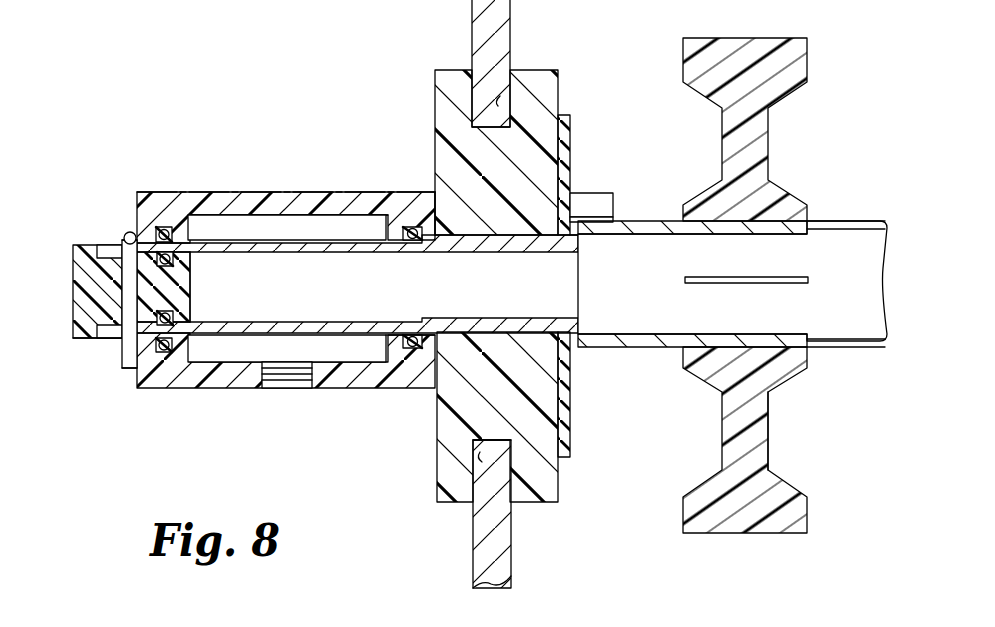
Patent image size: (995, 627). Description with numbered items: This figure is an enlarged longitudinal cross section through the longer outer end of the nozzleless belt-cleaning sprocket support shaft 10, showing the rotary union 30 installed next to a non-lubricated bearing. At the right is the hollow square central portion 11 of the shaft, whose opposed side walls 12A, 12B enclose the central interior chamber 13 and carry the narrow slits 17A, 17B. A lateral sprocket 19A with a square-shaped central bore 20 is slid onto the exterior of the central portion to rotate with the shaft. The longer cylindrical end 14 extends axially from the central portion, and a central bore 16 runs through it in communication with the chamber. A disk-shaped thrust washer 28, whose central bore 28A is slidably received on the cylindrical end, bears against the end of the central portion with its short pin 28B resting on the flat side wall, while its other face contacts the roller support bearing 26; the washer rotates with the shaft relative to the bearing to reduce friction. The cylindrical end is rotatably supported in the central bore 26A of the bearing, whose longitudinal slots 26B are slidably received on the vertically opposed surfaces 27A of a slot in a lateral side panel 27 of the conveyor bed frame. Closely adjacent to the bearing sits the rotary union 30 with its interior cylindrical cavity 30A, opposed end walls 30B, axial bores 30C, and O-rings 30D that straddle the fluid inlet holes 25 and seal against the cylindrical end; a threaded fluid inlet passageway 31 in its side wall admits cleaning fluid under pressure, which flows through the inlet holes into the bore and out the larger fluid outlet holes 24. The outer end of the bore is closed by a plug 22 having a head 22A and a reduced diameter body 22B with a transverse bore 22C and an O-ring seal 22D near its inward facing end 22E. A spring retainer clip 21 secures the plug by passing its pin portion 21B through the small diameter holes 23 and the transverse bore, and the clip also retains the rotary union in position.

The nozzleless belt-cleaning sprocket support shaft 10 is at (830, 190).
The central portion 11 is at (828, 352).
The side wall 12A is at (642, 220).
The side wall 12B is at (612, 347).
The central interior chamber 13 is at (634, 294).
The cylindrical end 14 is at (240, 229).
The central bore 16 is at (368, 298).
The slit 17A is at (846, 223).
The slit 17B is at (764, 277).
The lateral sprocket 19A is at (771, 437).
The square-shaped central bore 20 is at (779, 210).
The spring retainer clip 21 is at (128, 234).
The pin portion 21B is at (121, 357).
The plug 22 is at (71, 278).
The flange or head 22A is at (92, 340).
The body 22B is at (177, 274).
The transverse bore 22C is at (97, 297).
The O-ring seal 22D is at (175, 256).
The inward facing end 22E is at (183, 299).
The small diameter hole 23 is at (121, 235).
The fluid outlet hole 24 is at (498, 246).
The fluid inlet hole 25 is at (282, 244).
The roller support bearing 26 is at (434, 74).
The central bore 26A is at (458, 214).
The longitudinal slot 26B is at (498, 102).
The lateral side panel 27 is at (473, 525).
The vertically opposed surface 27A is at (472, 20).
The thrust washer 28 is at (565, 130).
The central bore 28A is at (578, 236).
The pin 28B is at (592, 192).
The rotary union 30 is at (316, 192).
The interior cylindrical cavity 30A is at (270, 205).
The end wall 30B is at (221, 194).
The axial bore 30C is at (405, 334).
The O-ring 30D is at (415, 240).
The threaded fluid inlet passageway 31 is at (292, 380).